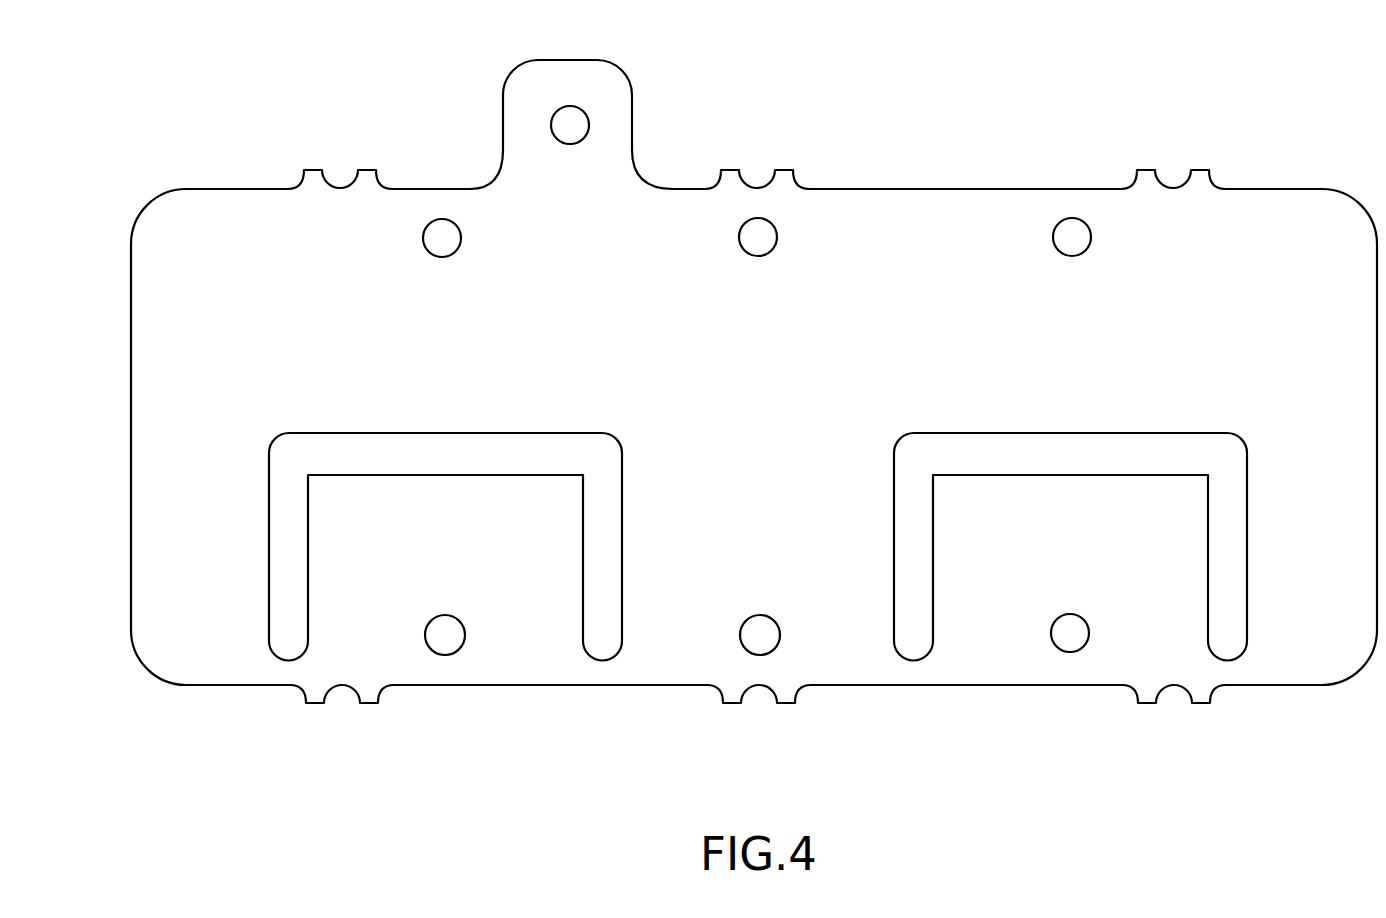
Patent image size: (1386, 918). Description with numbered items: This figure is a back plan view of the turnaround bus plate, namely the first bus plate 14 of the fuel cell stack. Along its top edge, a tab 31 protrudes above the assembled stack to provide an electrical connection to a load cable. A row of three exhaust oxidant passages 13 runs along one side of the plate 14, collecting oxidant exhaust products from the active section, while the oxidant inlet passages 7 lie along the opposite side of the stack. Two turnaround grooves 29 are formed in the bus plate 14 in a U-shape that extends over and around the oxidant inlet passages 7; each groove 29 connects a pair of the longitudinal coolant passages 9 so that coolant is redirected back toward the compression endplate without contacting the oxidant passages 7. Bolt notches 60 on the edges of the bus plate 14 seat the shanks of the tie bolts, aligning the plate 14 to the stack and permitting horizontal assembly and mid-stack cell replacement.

The first bus plate 14 is at (1307, 188).
The bolt notches 60 is at (312, 168).
The tab 31 is at (610, 88).
The exhaust oxidant passages 13 is at (452, 253).
The turnaround grooves 29 is at (477, 455).
The longitudinal coolant passages 9 is at (295, 640).
The oxidant inlet passages 7 is at (452, 617).